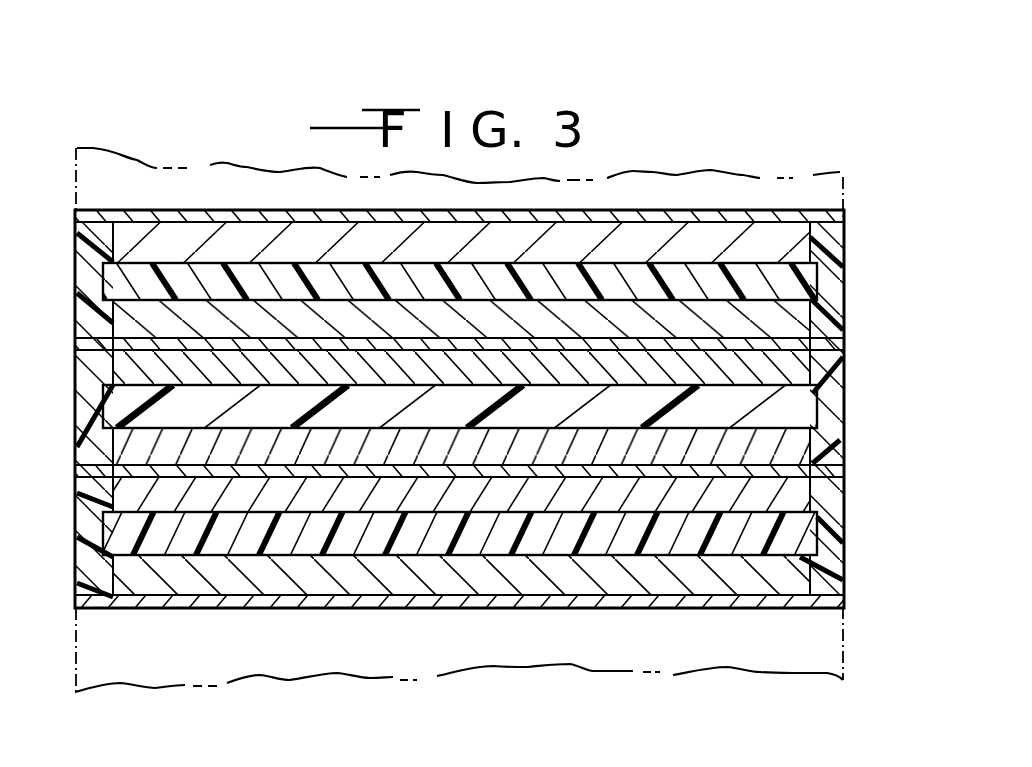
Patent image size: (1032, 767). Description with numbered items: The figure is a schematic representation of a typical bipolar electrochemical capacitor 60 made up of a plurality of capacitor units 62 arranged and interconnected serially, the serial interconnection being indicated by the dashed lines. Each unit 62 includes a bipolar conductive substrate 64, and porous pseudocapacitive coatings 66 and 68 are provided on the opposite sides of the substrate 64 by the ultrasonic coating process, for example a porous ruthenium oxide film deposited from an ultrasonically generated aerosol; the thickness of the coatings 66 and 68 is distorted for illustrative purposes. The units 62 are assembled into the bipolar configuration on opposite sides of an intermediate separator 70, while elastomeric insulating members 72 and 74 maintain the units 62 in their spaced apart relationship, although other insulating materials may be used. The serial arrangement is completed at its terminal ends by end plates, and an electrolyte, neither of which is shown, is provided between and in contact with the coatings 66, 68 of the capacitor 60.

The bipolar electrochemical capacitor 60 is at (817, 165).
The capacitor unit 62 is at (71, 382).
The bipolar conductive substrate 64 is at (667, 212).
The porous pseudocapacitive coating 66 is at (737, 235).
The porous pseudocapacitive coating 68 is at (611, 318).
The intermediate separator 70 is at (822, 258).
The elastomeric insulating member 72 is at (847, 227).
The elastomeric insulating member 74 is at (87, 260).